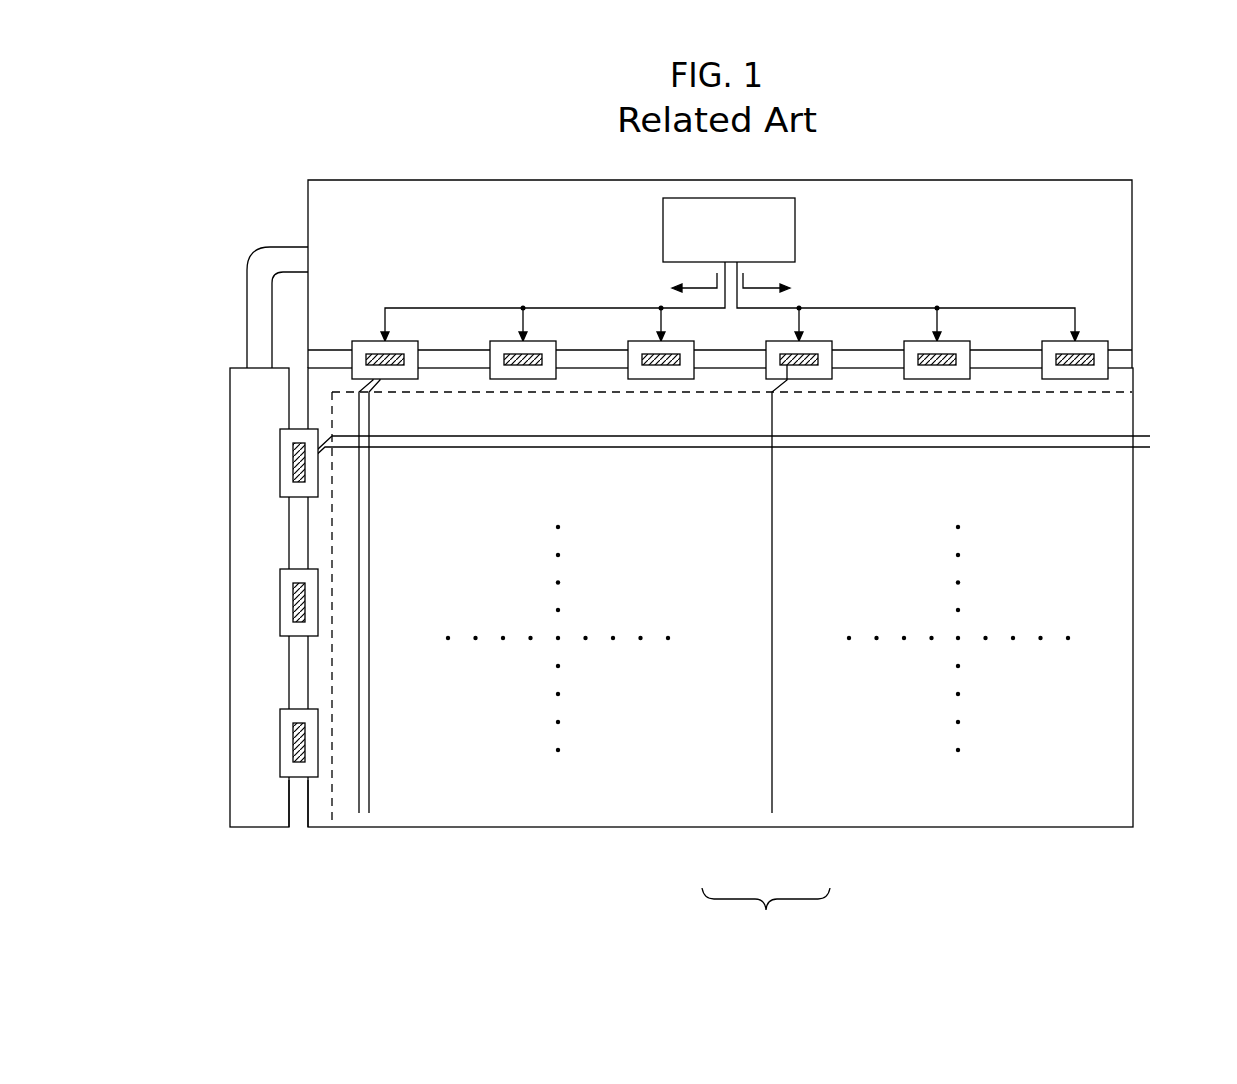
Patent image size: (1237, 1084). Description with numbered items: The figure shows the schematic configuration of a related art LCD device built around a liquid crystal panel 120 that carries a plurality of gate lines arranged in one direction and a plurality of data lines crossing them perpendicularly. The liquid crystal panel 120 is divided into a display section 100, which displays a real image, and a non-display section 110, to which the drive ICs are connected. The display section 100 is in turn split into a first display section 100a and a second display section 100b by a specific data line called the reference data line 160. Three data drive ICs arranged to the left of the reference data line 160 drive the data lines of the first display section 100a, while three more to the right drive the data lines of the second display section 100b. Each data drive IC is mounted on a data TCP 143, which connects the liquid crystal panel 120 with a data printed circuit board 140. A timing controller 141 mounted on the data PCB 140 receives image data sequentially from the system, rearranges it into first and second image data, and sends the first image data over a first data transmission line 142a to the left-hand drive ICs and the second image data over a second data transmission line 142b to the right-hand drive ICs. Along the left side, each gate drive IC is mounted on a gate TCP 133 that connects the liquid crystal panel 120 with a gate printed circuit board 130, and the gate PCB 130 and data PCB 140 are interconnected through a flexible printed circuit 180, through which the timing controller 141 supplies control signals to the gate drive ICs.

The display section 100 is at (766, 915).
The first display section 100a is at (690, 813).
The second display section 100b is at (824, 813).
The non-display section 110 is at (320, 817).
The liquid crystal panel 120 is at (1145, 820).
The gate printed circuit board 130 is at (247, 528).
The gate TCP 133 is at (287, 447).
The data printed circuit board 140 is at (413, 179).
The timing controller 141 is at (796, 228).
The first data transmission line 142a is at (542, 306).
The second data transmission line 142b is at (907, 308).
The data TCP 143 is at (370, 346).
The reference data line 160 is at (772, 725).
The flexible printed circuit 180 is at (262, 260).